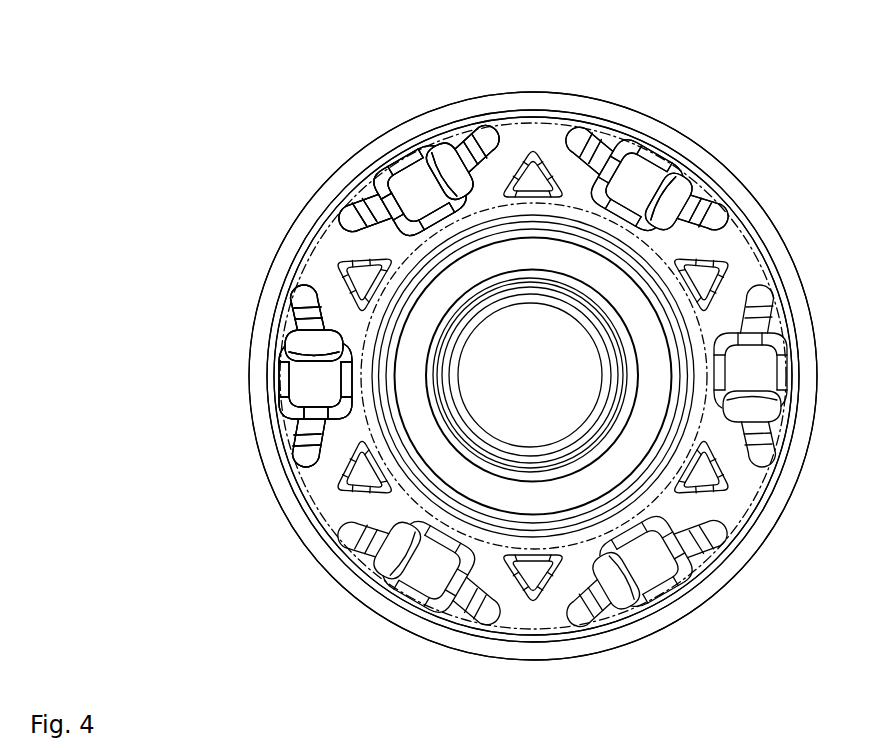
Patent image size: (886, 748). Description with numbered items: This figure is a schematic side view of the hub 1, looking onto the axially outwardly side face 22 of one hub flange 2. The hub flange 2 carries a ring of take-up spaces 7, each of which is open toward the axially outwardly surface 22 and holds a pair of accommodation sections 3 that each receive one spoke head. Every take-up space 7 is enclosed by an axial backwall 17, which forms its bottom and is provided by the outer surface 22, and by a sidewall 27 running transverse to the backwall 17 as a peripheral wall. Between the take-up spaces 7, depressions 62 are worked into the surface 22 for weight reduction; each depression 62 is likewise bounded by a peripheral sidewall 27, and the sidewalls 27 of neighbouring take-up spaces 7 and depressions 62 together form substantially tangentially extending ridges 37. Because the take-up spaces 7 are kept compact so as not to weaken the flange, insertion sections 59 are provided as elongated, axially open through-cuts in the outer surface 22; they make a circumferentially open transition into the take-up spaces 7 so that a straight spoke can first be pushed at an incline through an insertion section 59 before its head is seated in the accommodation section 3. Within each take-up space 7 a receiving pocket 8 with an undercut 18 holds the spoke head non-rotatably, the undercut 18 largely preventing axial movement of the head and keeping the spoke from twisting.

The hub 1 is at (150, 64).
The hub flange 2 is at (313, 550).
The accommodation section 3 is at (310, 350).
The take-up space 7 is at (407, 180).
The receiving pocket 8 is at (683, 199).
The axial backwall 17 is at (420, 188).
The undercut 18 is at (695, 198).
The axially outwardly side face 22 is at (488, 550).
The sidewall 27 is at (470, 178).
The ridge 37 is at (508, 153).
The insertion section 59 is at (302, 294).
The depression 62 is at (357, 277).